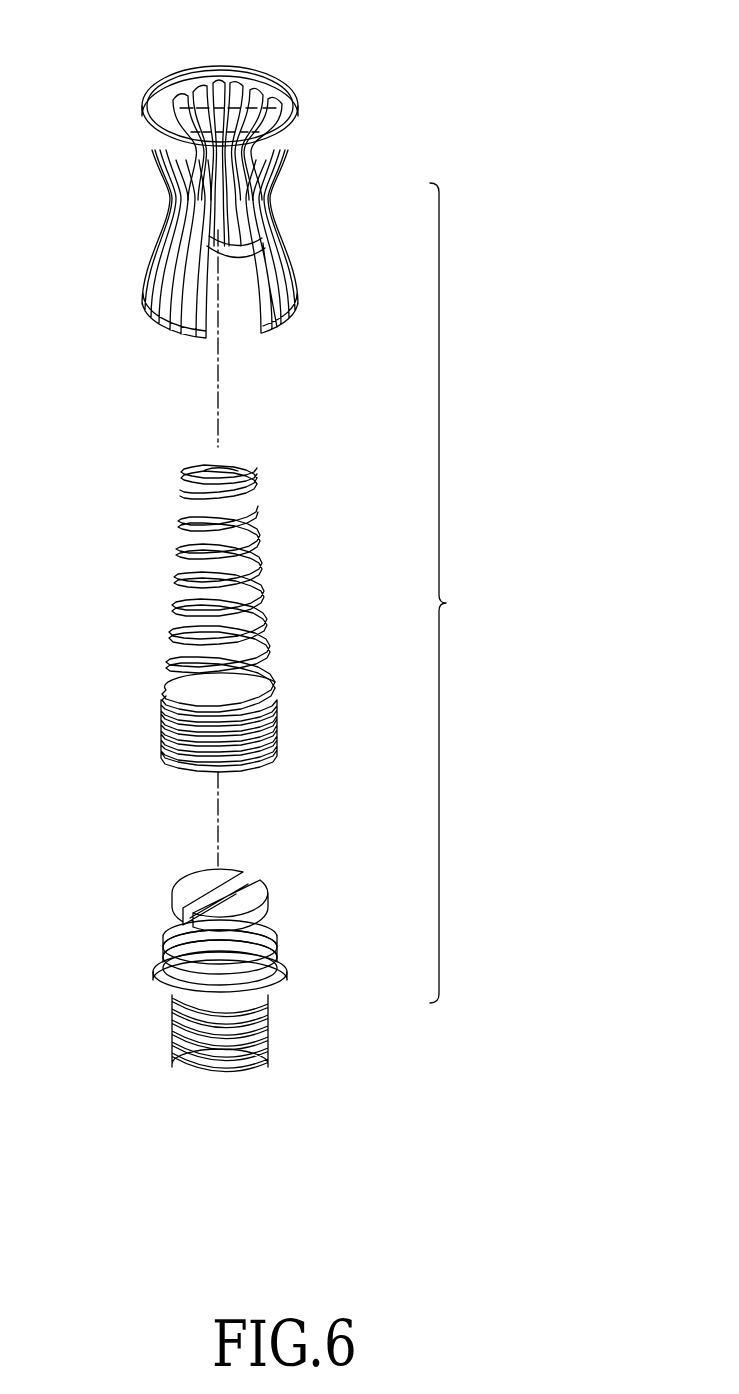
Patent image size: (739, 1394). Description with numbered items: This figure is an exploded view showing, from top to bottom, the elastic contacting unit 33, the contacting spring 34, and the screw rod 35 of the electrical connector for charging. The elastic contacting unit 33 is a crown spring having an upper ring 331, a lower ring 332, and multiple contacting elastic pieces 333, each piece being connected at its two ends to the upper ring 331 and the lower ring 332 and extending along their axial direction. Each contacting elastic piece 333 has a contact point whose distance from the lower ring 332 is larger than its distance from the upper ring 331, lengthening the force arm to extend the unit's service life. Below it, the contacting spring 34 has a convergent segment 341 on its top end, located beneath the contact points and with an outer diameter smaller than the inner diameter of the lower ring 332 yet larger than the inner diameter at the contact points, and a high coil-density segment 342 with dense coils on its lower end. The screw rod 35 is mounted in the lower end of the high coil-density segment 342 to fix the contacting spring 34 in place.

The elastic contacting unit 33 is at (282, 72).
The upper ring 331 is at (178, 82).
The lower ring 332 is at (288, 320).
The contacting elastic pieces 333 is at (273, 275).
The contacting spring 34 is at (258, 573).
The convergent segment 341 is at (240, 483).
The high coil-density segment 342 is at (255, 748).
The screw rod 35 is at (253, 958).